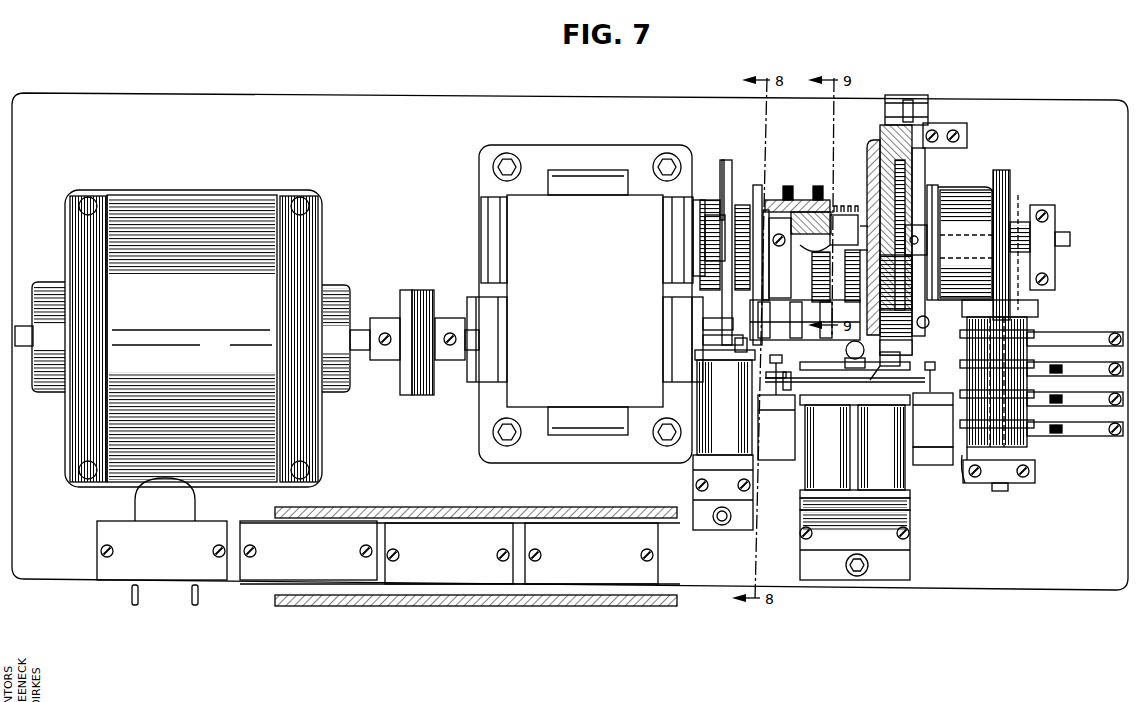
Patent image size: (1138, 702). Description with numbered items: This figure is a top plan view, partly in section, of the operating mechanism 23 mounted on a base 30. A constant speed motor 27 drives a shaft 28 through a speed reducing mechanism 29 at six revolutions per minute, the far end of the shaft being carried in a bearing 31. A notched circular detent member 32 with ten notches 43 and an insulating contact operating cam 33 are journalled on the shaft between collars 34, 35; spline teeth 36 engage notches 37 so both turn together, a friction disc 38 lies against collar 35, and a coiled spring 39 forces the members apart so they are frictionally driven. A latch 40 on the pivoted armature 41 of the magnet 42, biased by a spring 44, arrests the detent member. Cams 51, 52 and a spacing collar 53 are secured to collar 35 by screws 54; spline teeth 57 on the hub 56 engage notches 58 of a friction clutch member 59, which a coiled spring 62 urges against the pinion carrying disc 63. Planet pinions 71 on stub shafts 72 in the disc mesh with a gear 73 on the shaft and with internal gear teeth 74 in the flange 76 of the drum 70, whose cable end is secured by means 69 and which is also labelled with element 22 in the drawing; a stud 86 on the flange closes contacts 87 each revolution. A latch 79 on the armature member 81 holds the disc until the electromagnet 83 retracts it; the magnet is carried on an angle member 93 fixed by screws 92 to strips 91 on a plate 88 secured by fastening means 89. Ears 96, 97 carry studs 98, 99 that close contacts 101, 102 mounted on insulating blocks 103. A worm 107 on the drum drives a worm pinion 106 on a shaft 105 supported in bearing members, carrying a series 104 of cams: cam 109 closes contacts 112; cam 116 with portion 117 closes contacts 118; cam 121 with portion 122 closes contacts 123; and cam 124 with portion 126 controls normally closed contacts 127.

The base 30 is at (385, 108).
The constant speed motor 27 is at (150, 225).
The speed reducing mechanism 29 is at (568, 210).
The shaft 28 is at (700, 234).
The operating mechanism 23 is at (243, 584).
The collar 34 is at (695, 222).
The spline teeth 36 is at (712, 250).
The spring 44 is at (703, 323).
The pivoted armature 41 is at (703, 342).
The magnet 42 is at (718, 392).
The series of contact operating cams 104 is at (778, 458).
The spring contacts 101 is at (776, 427).
The contact operating stud 98 is at (777, 355).
The latch 40 is at (751, 346).
The ear 96 is at (787, 372).
The block of insulating material 103 is at (862, 380).
The notches 37 is at (707, 200).
The notches 43 is at (720, 195).
The notched circular detent member 32 is at (727, 162).
The coiled spring 39 is at (742, 205).
The contact operating cam 33 is at (757, 185).
The friction disc 38 is at (766, 210).
The collar 35 is at (778, 218).
The contact operating cam 51 is at (797, 200).
The spacing collar 53 is at (808, 212).
The contact operating cam 52 is at (791, 188).
The screws 54 is at (822, 190).
The spline teeth 57 is at (840, 215).
The notches 58 is at (838, 240).
The hub 56 is at (820, 275).
The coiled spring 62 is at (852, 302).
The friction clutch member 59 is at (870, 148).
The pinion carrying disc 63 is at (886, 125).
The flange 76 is at (898, 128).
The contacts 87 is at (910, 102).
The contact operating stud 86 is at (918, 110).
The internal gear teeth 74 is at (938, 128).
The stub shafts 72 is at (920, 165).
The gear 73 is at (926, 240).
The planet pinions 71 is at (931, 190).
The drum 22 is at (946, 190).
The drum 70 is at (970, 210).
The worm 107 is at (1002, 172).
The worm pinion 106 is at (1023, 239).
The bearing 31 is at (1046, 230).
The securing means 69 is at (932, 318).
The latch 79 is at (900, 360).
The contact operating stud 99 is at (940, 375).
The fastening means 89 is at (856, 358).
The armature member 81 is at (858, 405).
The ear 97 is at (890, 425).
The electromagnet 83 is at (908, 494).
The strips 91 is at (800, 504).
The plate 88 is at (897, 570).
The screws 92 is at (800, 535).
The angle member 93 is at (848, 512).
The spring contacts 102 is at (933, 420).
The contacts 112 is at (1085, 415).
The contact operating portion 126 is at (1015, 333).
The contact operating portion 122 is at (1010, 345).
The cam 121 is at (1010, 372).
The cam 124 is at (1018, 340).
The contacts 127 is at (1072, 340).
The contacts 123 is at (1075, 372).
The contact operating portion 117 is at (1036, 382).
The contacts 118 is at (1076, 398).
The cam 116 is at (1040, 400).
The shaft 105 is at (1000, 485).
The cam 109 is at (968, 473).